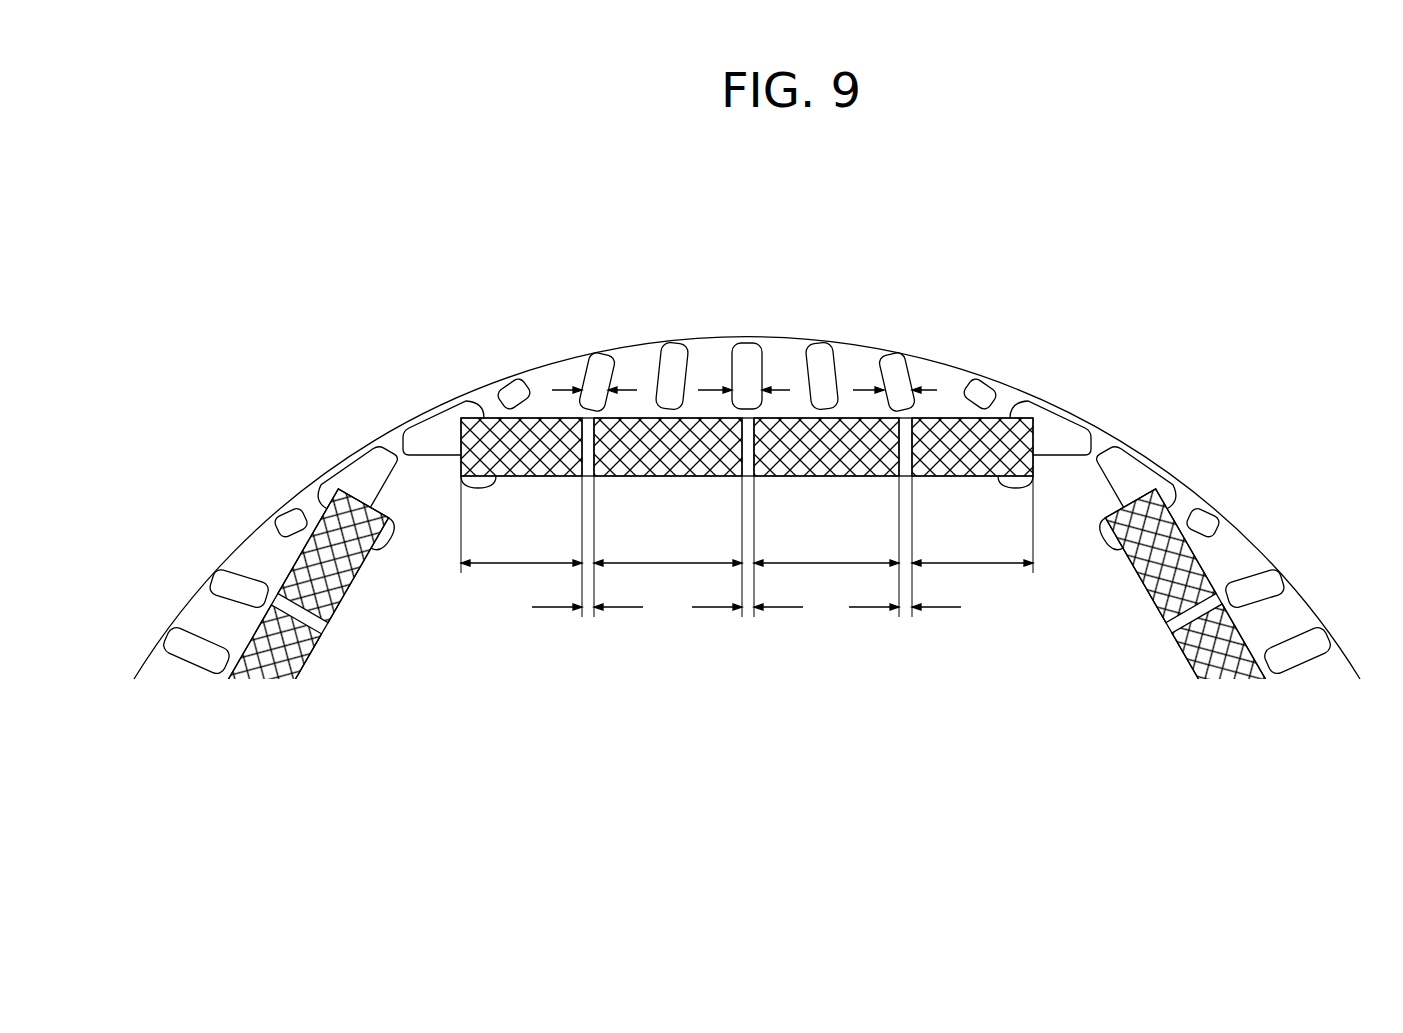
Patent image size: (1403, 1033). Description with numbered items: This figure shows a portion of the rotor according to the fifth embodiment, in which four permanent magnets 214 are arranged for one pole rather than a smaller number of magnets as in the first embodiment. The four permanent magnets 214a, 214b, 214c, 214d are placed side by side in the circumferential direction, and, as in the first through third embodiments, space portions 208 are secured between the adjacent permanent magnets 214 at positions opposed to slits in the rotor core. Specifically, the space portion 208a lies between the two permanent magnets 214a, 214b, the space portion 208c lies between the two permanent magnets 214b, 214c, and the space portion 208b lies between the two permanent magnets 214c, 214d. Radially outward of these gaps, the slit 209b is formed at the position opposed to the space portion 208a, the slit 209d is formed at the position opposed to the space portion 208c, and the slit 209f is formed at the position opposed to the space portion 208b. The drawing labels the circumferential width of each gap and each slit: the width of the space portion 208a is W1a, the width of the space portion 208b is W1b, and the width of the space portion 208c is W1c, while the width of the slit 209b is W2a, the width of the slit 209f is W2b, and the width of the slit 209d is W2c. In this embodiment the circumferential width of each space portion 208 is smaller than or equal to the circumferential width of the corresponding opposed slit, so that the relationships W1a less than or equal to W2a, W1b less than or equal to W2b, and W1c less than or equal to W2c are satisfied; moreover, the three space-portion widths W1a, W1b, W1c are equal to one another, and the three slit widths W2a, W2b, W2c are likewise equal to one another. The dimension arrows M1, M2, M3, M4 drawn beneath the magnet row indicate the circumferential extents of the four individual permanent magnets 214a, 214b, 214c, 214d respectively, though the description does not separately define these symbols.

The permanent magnets 214 is at (734, 374).
The permanent magnet 214a is at (470, 437).
The permanent magnet 214b is at (704, 435).
The permanent magnet 214c is at (816, 472).
The permanent magnet 214d is at (970, 432).
The space portions 208 is at (762, 398).
The space portion 208a is at (588, 440).
The space portion 208b is at (908, 440).
The space portion 208c is at (745, 476).
The slit 209b is at (590, 372).
The slit 209d is at (762, 365).
The slit 209f is at (908, 368).
The circumferential width of slit 209b W2a is at (630, 387).
The circumferential width of slit 209f W2b is at (868, 387).
The circumferential width of slit 209d W2c is at (712, 387).
The magnet piece width M1 is at (521, 550).
The magnet piece width M2 is at (668, 550).
The magnet piece width M3 is at (826, 550).
The magnet piece width M4 is at (972, 550).
The circumferential width of space portion 208a W1a is at (587, 630).
The circumferential width of space portion 208b W1b is at (905, 630).
The circumferential width of space portion 208c W1c is at (747, 630).